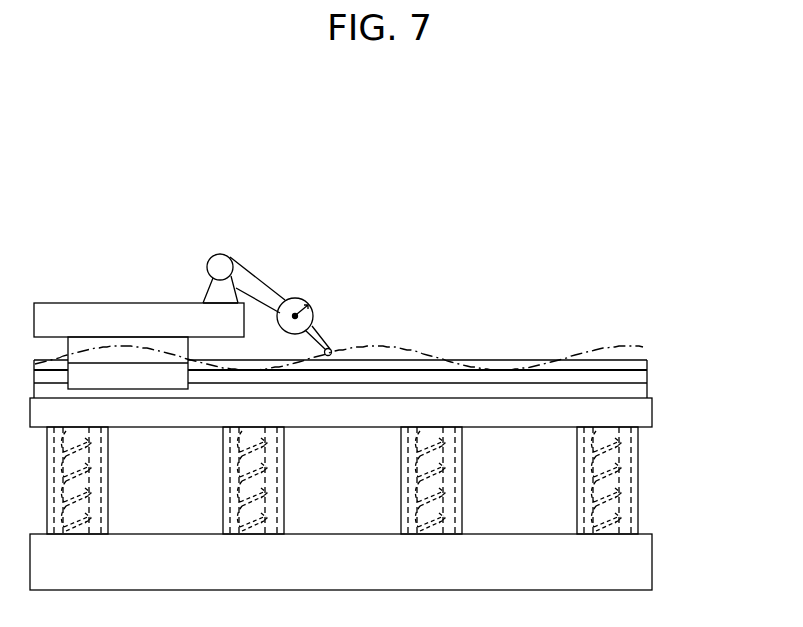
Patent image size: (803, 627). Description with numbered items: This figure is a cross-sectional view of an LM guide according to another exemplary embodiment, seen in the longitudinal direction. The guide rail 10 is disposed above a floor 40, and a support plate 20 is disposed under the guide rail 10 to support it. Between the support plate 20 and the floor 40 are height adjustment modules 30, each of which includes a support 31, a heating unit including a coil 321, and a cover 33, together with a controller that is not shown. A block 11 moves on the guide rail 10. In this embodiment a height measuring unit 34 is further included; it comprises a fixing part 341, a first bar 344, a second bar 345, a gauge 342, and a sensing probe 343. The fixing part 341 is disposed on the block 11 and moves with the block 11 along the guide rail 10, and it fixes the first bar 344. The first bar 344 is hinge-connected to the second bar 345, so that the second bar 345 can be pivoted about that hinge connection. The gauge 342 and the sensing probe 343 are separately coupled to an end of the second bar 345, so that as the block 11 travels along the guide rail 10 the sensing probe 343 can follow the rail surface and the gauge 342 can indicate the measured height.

The guide rail 10 is at (640, 375).
The block 11 is at (148, 377).
The support plate 20 is at (640, 412).
The height adjustment module 30 is at (722, 438).
The support 31 is at (607, 503).
The cover 33 is at (640, 447).
The coil 321 is at (607, 473).
The height measuring unit 34 is at (246, 288).
The fixing part 341 is at (84, 317).
The gauge 342 is at (302, 294).
The sensing probe 343 is at (372, 264).
The first bar 344 is at (215, 290).
The second bar 345 is at (247, 282).
The floor 40 is at (640, 560).